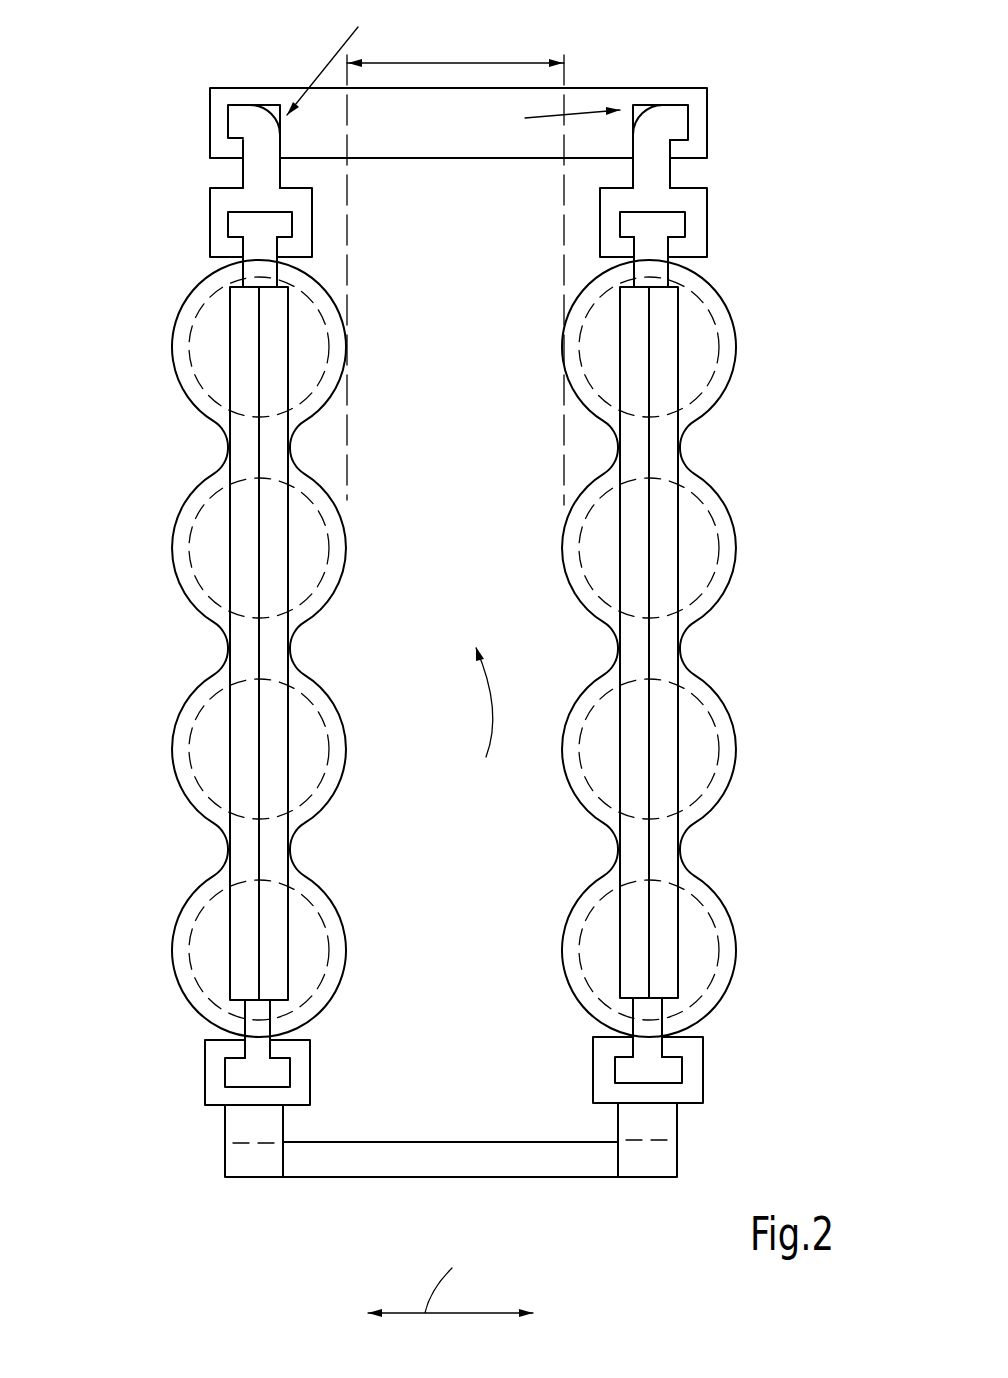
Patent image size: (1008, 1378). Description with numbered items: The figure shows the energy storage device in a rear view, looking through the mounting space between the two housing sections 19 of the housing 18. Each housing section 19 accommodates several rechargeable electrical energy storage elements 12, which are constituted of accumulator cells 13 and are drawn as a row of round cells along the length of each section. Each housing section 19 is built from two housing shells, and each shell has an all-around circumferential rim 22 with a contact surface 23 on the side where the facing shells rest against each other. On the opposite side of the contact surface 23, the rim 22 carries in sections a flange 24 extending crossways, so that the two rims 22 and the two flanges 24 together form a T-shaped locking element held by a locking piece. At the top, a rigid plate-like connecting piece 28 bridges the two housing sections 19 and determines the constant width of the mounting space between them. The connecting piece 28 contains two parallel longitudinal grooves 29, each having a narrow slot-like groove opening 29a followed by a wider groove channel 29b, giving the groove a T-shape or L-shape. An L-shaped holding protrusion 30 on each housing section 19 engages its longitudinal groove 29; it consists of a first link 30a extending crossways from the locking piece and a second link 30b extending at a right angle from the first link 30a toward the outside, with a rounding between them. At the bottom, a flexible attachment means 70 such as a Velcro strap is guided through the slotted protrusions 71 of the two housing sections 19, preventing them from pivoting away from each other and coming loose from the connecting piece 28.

The rechargeable electrical energy storage element 12 is at (466, 643).
The accumulator cell 13 is at (713, 303).
The housing 18 is at (757, 170).
The housing section 19 is at (519, 954).
The rim 22 is at (260, 281).
The contact surface 23 is at (640, 1025).
The flange 24 is at (240, 223).
The connecting piece 28 is at (592, 88).
The longitudinal groove 29 is at (434, 96).
The groove opening 29a is at (282, 135).
The groove channel 29b is at (283, 138).
The holding protrusion 30 is at (434, 108).
The first link 30a is at (260, 168).
The second link 30b is at (240, 120).
The attachment means 70 is at (587, 1177).
The slotted protrusion 71 is at (665, 1125).